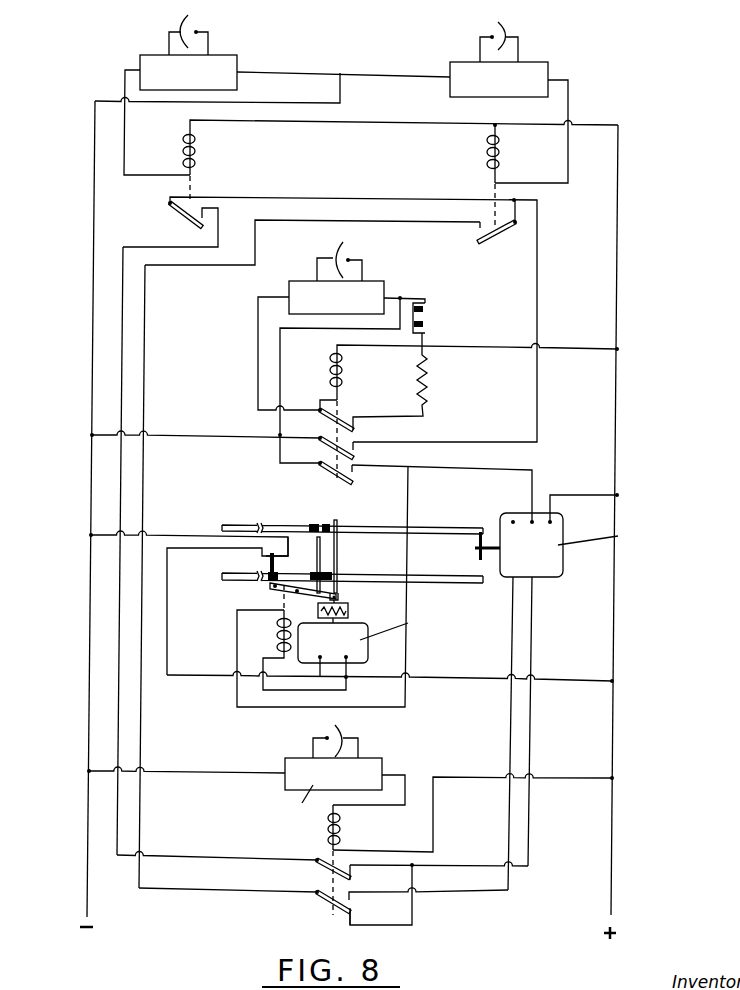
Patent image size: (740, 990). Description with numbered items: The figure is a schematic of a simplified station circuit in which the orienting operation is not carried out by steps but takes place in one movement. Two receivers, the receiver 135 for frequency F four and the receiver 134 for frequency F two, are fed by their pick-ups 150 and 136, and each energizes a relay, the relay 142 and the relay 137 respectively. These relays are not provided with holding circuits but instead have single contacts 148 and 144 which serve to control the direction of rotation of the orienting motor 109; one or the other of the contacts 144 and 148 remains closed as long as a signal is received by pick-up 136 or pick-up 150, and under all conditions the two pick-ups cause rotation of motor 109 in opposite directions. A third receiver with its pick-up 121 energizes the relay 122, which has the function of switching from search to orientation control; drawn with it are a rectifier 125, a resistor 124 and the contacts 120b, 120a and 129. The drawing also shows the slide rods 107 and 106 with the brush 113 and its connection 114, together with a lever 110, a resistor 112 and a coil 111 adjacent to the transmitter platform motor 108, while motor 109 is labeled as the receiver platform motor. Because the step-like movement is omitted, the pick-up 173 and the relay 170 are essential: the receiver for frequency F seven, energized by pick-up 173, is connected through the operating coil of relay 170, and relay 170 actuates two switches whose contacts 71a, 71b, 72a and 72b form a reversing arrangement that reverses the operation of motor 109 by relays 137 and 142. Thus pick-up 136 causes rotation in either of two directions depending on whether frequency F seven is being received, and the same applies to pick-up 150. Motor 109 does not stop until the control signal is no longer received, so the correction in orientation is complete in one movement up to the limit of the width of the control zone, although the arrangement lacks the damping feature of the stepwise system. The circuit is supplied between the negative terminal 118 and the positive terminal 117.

The receiver R4 for frequency F4 135 is at (147, 54).
The pick-up 150 is at (197, 30).
The receiver R2 for frequency F2 134 is at (542, 58).
The pick-up 136 is at (509, 30).
The relay 142 is at (197, 148).
The relay 137 is at (485, 145).
The contact 148 is at (170, 224).
The contact 144 is at (480, 235).
The antenna of receiver R5 121 is at (328, 243).
The rectifier 125 is at (426, 316).
The relay 122 is at (330, 361).
The resistor 124 is at (429, 376).
The relay switch contact 120b is at (356, 442).
The relay switch contact 120a is at (356, 462).
The relay switch 129 is at (357, 473).
The slide rod 107 is at (338, 527).
The slide rod 106 is at (366, 574).
The brush 113 is at (262, 553).
The brush connection 114 is at (291, 549).
The lever 110 is at (297, 592).
The resistor 112 is at (356, 612).
The relay coil 111 is at (276, 636).
The transmitter platform motor 108 is at (402, 638).
The motor 109 is at (597, 545).
The pick-up 173 is at (344, 729).
The relay 170 is at (342, 828).
The contact 71a is at (350, 870).
The contact 71b is at (352, 884).
The contact 72a is at (351, 894).
The contact 72b is at (351, 912).
The negative battery terminal 118 is at (85, 915).
The positive battery terminal 117 is at (613, 915).